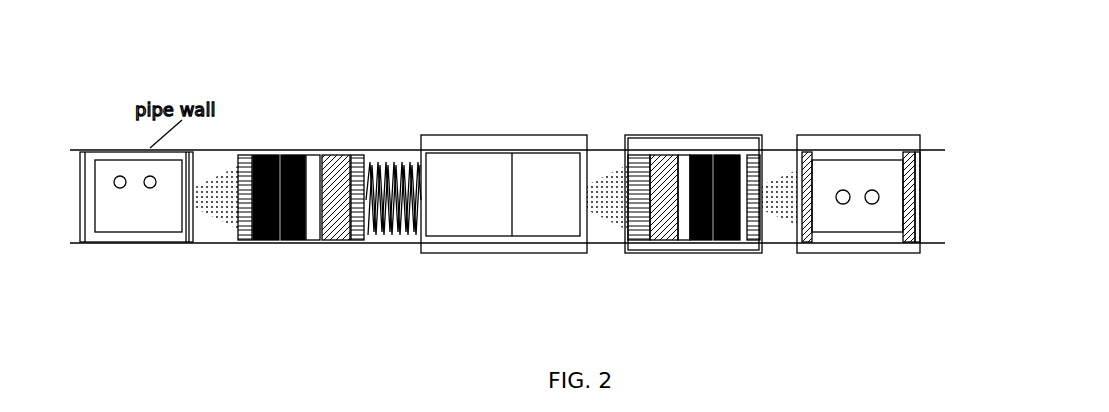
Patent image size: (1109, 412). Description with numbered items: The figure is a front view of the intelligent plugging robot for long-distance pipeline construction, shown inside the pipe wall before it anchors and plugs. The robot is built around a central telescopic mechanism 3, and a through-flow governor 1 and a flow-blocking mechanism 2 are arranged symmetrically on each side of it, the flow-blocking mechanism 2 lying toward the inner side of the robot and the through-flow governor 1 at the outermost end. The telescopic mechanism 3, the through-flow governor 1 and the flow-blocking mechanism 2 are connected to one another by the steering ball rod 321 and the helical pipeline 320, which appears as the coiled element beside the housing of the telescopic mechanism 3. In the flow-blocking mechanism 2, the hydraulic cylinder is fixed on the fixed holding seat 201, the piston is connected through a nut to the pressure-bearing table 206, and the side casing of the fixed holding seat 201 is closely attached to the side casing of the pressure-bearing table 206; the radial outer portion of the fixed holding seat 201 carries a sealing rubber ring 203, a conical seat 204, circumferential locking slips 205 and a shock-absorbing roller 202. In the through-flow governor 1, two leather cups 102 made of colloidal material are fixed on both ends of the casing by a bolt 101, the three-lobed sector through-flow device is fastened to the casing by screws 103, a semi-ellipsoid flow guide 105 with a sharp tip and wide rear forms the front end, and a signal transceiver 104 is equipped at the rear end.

The through-flow governor 1 is at (865, 135).
The bolt 101 is at (912, 218).
The leather cup 102 is at (916, 250).
The screws 103 is at (880, 217).
The signal transceiver 104 is at (800, 252).
The flow guide 105 is at (854, 217).
The flow-blocking mechanism 2 is at (725, 150).
The fixed holding seat 201 is at (765, 140).
The shock-absorbing roller 202 is at (758, 243).
The sealing rubber ring 203 is at (706, 240).
The conical seat 204 is at (688, 235).
The circumferential locking slips 205 is at (660, 140).
The pressure-bearing table 206 is at (638, 228).
The telescopic mechanism 3 is at (508, 135).
The helical pipeline 320 is at (392, 172).
The steering ball rod 321 is at (397, 198).